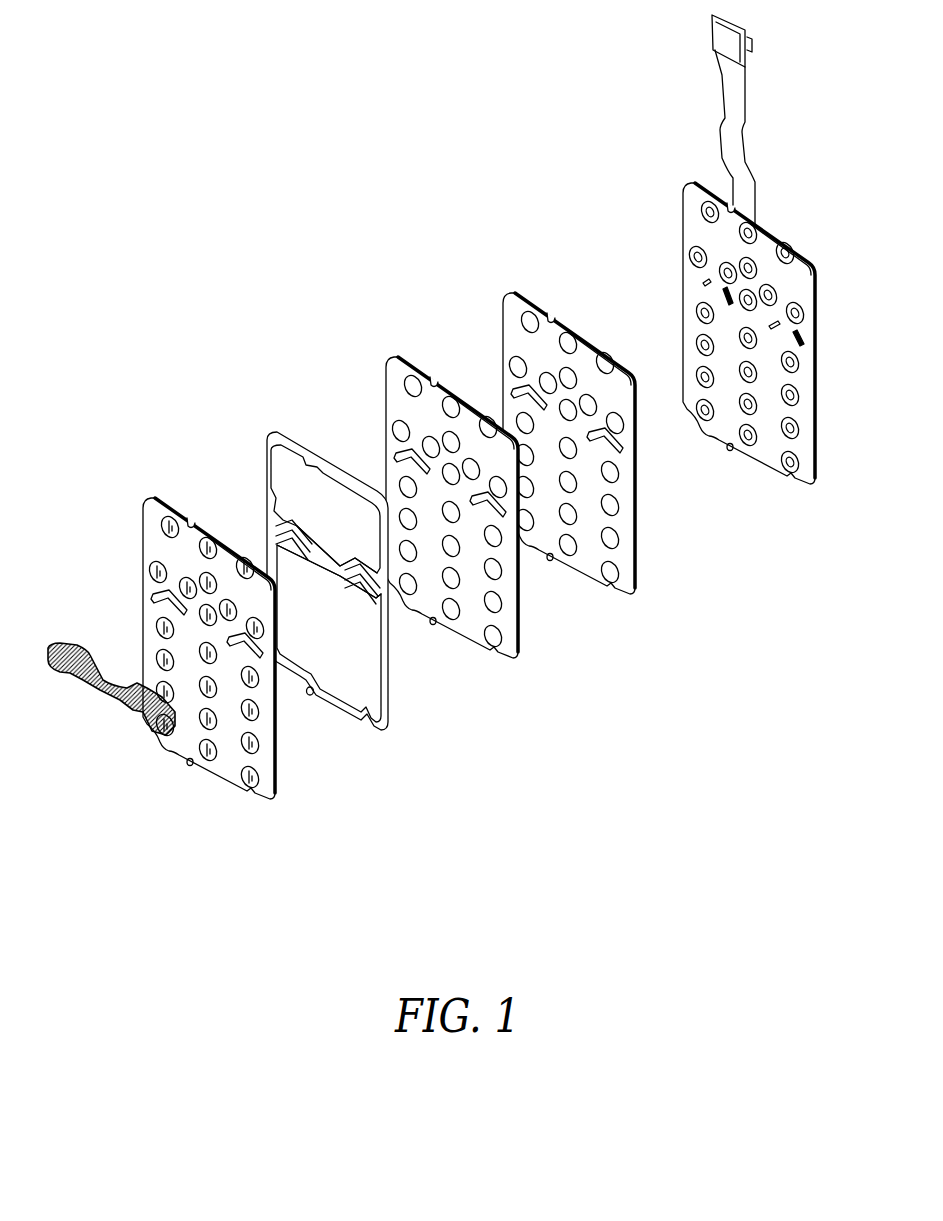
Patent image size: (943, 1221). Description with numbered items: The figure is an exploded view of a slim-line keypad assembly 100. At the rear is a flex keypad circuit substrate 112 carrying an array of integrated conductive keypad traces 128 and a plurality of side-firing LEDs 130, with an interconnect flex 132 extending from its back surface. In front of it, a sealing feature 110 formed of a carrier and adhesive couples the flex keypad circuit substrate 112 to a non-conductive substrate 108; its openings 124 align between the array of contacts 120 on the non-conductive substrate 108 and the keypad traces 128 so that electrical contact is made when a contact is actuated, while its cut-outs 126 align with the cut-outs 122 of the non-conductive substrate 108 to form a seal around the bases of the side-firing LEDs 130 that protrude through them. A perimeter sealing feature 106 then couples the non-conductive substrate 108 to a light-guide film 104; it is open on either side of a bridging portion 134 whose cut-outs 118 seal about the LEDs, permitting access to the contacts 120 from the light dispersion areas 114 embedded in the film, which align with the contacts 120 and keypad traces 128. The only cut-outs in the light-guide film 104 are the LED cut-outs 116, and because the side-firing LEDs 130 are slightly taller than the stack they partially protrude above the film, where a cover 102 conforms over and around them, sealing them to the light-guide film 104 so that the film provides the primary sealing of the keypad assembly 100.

The keypad assembly 100 is at (745, 929).
The cover 102 is at (62, 674).
The light-guide film 104 is at (216, 652).
The perimeter sealing feature 106 is at (328, 606).
The non-conductive substrate 108 is at (449, 521).
The sealing feature 110 is at (569, 455).
The flex keypad circuit substrate 112 is at (750, 272).
The light dispersion areas 114 is at (189, 511).
The cut-outs 116 is at (216, 626).
The cut-outs 118 is at (305, 554).
The array of contacts 120 is at (464, 390).
The cut-outs 122 is at (449, 503).
The openings 124 is at (590, 326).
The cut-outs 126 is at (569, 383).
The conductive keypad traces 128 is at (791, 230).
The side-firing LEDs 130 is at (750, 312).
The interconnect flex 132 is at (755, 121).
The bridging portion 134 is at (328, 556).